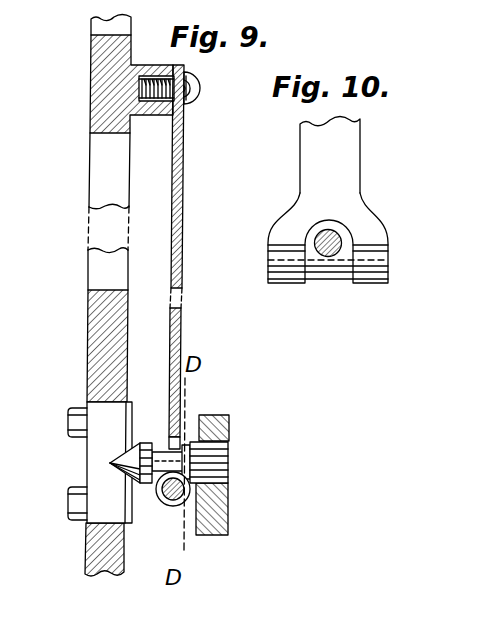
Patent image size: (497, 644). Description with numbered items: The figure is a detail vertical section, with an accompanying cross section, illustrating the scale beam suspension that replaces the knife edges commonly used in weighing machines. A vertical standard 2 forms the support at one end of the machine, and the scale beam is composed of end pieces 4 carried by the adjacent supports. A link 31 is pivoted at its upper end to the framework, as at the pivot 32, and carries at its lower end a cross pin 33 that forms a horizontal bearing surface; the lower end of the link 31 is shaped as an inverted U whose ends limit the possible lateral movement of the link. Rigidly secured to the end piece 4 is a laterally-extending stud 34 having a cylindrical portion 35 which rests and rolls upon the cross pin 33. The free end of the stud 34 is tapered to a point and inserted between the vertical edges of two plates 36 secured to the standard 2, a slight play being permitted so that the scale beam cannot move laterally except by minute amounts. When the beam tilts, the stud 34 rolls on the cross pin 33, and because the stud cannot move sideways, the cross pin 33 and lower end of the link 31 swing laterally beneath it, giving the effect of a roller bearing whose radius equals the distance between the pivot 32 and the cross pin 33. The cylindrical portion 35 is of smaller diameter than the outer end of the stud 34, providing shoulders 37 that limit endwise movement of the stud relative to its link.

In FIG. 9, the vertical standard 2 is at (102, 352).
In FIG. 9, the end piece 4 is at (229, 508).
In FIG. 9, the link 31 is at (183, 237).
In FIG. 10, the link 31 is at (328, 200).
In FIG. 9, the pivot 32 is at (186, 86).
In FIG. 9, the cross pin 33 is at (172, 492).
In FIG. 10, the cross pin 33 is at (340, 272).
In FIG. 9, the stud 34 is at (217, 455).
In FIG. 9, the cylindrical portion 35 is at (158, 448).
In FIG. 10, the cylindrical portion 35 is at (340, 238).
In FIG. 9, the plate 36 is at (131, 424).
In FIG. 9, the shoulder 37 is at (192, 447).